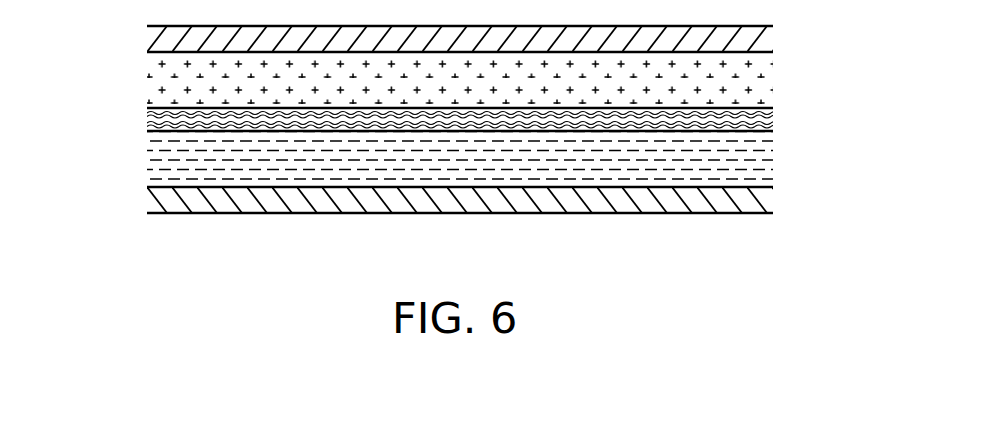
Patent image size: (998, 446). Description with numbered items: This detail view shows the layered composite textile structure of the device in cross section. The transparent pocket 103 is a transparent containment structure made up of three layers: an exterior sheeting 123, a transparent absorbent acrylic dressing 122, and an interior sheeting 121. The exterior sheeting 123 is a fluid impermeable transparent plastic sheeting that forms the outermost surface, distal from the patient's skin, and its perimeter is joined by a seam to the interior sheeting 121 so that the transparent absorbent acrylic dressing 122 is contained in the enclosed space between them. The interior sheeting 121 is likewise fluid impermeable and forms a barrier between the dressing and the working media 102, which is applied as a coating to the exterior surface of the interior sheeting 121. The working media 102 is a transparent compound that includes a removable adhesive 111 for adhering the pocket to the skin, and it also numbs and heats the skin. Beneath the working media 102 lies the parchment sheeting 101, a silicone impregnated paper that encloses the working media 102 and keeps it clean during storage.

The parchment sheeting 101 is at (182, 198).
The working media 102 is at (753, 168).
The transparent pocket 103 is at (560, 170).
The adhesive 111 is at (163, 150).
The interior sheeting 121 is at (757, 123).
The transparent absorbent acrylic dressing 122 is at (760, 87).
The exterior sheeting 123 is at (760, 40).